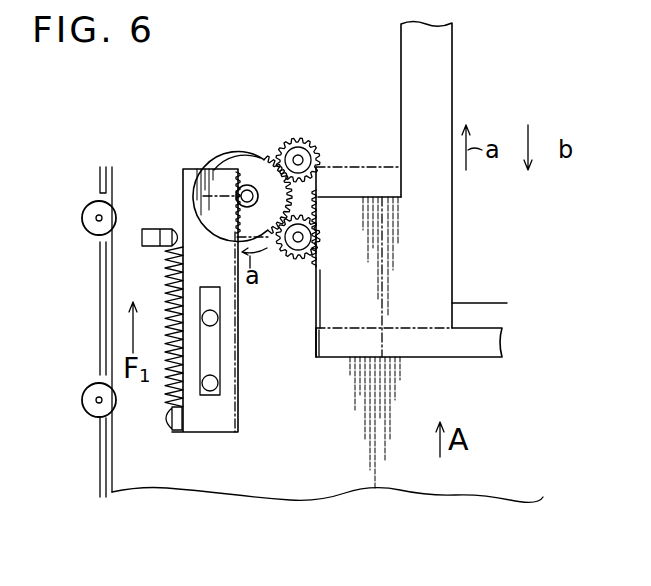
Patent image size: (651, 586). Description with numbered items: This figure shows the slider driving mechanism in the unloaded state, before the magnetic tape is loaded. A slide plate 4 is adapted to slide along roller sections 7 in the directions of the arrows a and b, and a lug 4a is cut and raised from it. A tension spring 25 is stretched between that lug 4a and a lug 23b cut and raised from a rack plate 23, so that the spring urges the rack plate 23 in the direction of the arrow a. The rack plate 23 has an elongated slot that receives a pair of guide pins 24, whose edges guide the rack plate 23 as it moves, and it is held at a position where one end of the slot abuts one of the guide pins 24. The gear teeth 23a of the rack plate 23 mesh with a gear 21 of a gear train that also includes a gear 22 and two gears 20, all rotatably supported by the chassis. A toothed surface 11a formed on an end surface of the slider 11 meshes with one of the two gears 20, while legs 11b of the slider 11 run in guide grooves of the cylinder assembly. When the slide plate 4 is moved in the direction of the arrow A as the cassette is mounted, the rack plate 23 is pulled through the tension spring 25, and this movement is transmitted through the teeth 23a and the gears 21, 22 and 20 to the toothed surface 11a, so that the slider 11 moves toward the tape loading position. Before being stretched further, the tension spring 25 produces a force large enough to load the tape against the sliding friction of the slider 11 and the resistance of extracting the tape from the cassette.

The slide plate 4 is at (137, 191).
The lug 4a is at (142, 240).
The roller sections 7 is at (82, 218).
The slider 11 is at (427, 44).
The toothed surface 11a is at (316, 338).
The legs 11b is at (452, 88).
The gears 20 is at (303, 140).
The gear 21 is at (247, 185).
The gear 22 is at (260, 152).
The rack plate 23 is at (183, 193).
The gear teeth 23a is at (238, 395).
The lug 23b is at (175, 416).
The guide pins 24 is at (214, 320).
The tension spring 25 is at (167, 307).